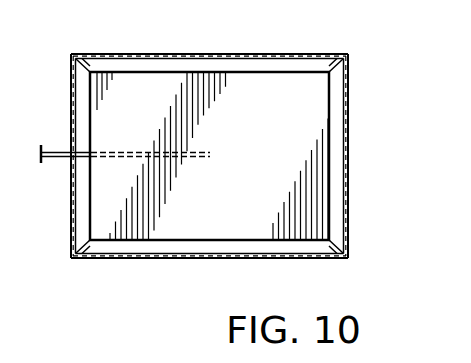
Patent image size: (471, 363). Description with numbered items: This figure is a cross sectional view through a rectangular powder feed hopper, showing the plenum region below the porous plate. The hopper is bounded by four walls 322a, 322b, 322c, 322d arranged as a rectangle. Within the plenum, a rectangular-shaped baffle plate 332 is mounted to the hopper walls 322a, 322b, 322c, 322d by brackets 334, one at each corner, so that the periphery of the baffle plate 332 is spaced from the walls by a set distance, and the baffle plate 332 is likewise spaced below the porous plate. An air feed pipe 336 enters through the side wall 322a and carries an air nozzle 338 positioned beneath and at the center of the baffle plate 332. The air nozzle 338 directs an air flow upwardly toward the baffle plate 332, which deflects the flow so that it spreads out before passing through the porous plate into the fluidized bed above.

The hopper wall 322a is at (66, 116).
The hopper wall 322b is at (221, 38).
The hopper wall 322c is at (352, 203).
The hopper wall 322d is at (175, 260).
The brackets 334 is at (95, 53).
The baffle plate 332 is at (268, 134).
The air feed pipe 336 is at (60, 160).
The air nozzle 338 is at (208, 157).